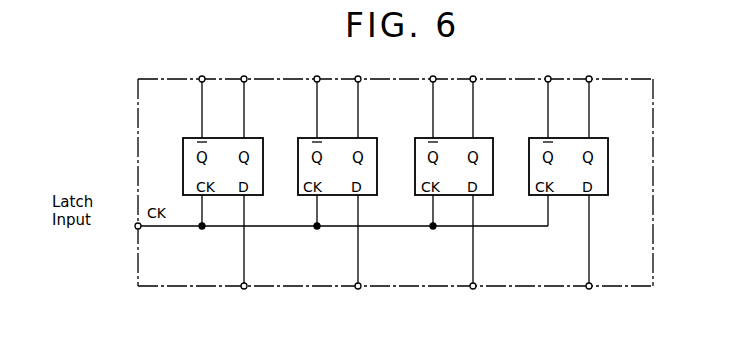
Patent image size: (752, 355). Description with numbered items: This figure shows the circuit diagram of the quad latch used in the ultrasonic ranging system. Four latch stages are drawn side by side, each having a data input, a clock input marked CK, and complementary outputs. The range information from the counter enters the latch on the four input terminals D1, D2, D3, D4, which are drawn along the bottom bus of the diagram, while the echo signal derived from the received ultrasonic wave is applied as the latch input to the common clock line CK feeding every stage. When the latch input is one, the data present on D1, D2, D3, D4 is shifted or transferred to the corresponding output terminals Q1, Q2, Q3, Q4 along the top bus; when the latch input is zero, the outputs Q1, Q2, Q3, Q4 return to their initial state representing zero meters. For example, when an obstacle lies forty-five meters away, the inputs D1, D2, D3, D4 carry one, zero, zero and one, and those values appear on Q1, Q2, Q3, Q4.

The output terminal Q1 is at (246, 98).
The output terminal Q2 is at (361, 98).
The output terminal Q3 is at (476, 98).
The output terminal Q4 is at (593, 98).
The input terminal D1 is at (244, 252).
The input terminal D2 is at (359, 252).
The input terminal D3 is at (475, 252).
The input terminal D4 is at (590, 252).